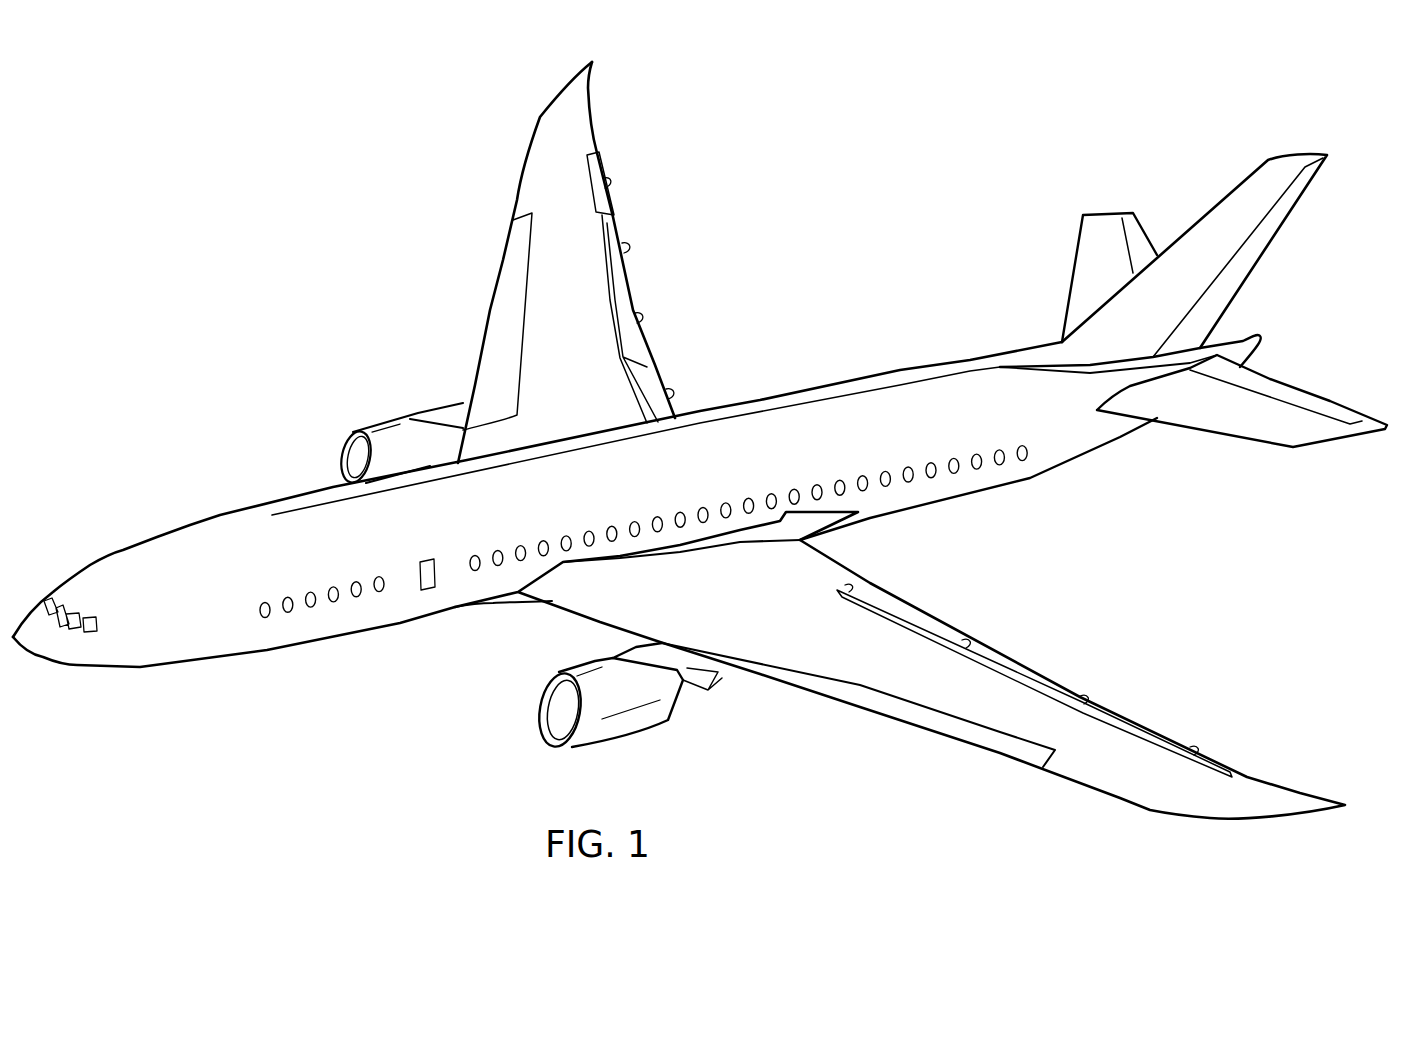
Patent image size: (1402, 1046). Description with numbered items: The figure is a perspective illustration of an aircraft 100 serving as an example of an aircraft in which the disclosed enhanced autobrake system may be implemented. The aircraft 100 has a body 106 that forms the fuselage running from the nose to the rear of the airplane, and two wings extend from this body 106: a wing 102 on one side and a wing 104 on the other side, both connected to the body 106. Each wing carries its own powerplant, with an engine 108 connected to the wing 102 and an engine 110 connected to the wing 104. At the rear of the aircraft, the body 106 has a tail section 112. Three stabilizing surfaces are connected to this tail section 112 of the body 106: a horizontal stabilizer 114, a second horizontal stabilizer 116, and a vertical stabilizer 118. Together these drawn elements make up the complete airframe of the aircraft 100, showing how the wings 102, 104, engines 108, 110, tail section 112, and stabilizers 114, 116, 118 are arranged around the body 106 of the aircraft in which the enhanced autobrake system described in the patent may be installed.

The aircraft 100 is at (294, 217).
The wing 102 is at (596, 100).
The wing 104 is at (1185, 816).
The body 106 is at (197, 522).
The engine 108 is at (385, 413).
The engine 110 is at (626, 740).
The tail section 112 is at (1141, 477).
The horizontal stabilizer 114 is at (1073, 273).
The horizontal stabilizer 116 is at (1245, 433).
The vertical stabilizer 118 is at (1272, 243).